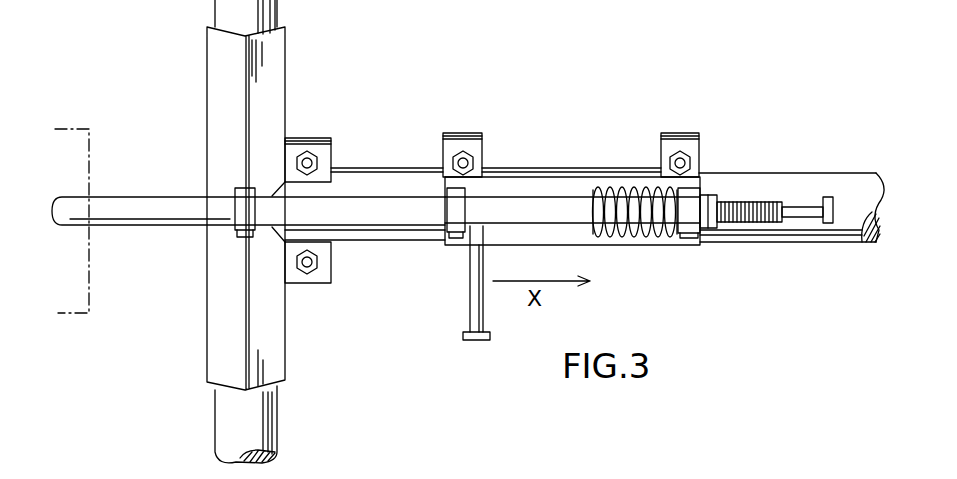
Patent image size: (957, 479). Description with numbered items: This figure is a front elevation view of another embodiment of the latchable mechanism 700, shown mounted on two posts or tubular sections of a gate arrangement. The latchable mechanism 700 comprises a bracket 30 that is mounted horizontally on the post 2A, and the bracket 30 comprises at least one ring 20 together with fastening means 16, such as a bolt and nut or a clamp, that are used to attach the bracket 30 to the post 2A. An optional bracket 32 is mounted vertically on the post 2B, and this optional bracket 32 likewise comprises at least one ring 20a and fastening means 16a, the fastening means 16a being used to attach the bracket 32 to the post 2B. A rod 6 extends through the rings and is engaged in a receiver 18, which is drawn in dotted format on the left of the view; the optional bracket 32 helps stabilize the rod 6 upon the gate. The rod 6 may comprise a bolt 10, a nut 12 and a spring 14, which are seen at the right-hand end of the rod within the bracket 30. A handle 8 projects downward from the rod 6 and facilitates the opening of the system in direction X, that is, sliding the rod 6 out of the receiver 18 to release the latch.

The post 2A is at (866, 180).
The post 2B is at (235, 419).
The rod 6 is at (410, 218).
The handle 8 is at (475, 311).
The bolt 10 is at (804, 217).
The nut 12 is at (712, 222).
The spring 14 is at (667, 236).
The fastening means 16 is at (463, 150).
The fastening means 16a is at (307, 150).
The receiver 18 is at (72, 153).
The ring 20 is at (452, 208).
The ring 20a is at (250, 237).
The bracket 30 is at (503, 183).
The bracket 32 is at (277, 57).
The latchable mechanism 700 is at (643, 103).